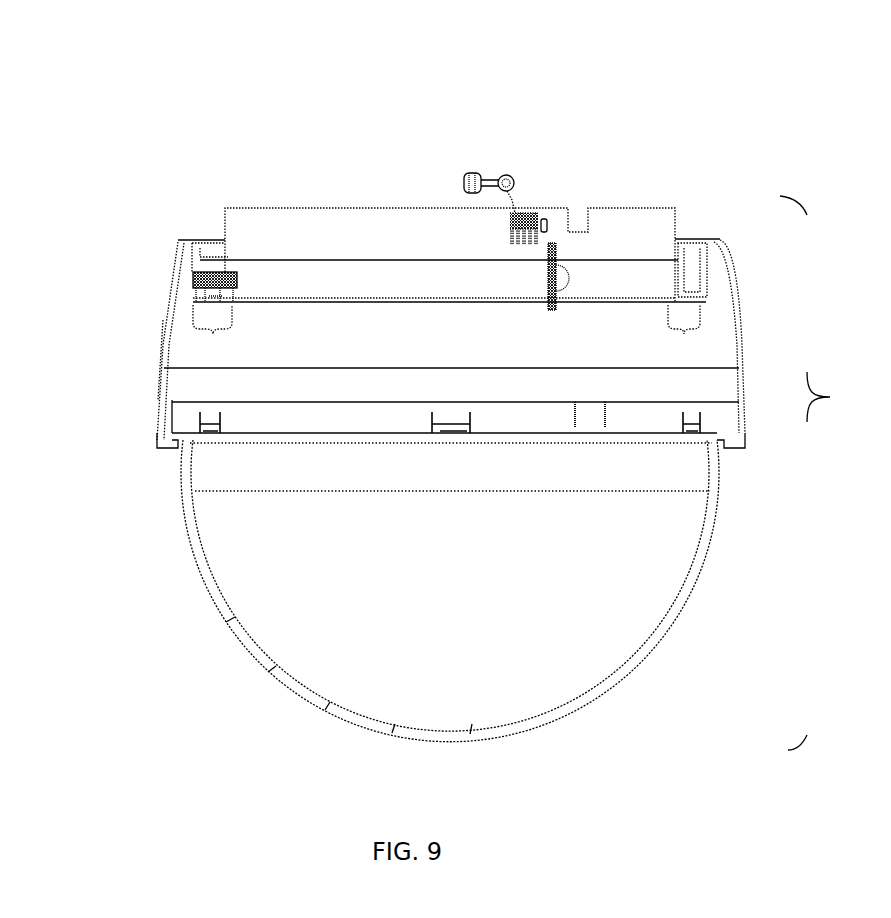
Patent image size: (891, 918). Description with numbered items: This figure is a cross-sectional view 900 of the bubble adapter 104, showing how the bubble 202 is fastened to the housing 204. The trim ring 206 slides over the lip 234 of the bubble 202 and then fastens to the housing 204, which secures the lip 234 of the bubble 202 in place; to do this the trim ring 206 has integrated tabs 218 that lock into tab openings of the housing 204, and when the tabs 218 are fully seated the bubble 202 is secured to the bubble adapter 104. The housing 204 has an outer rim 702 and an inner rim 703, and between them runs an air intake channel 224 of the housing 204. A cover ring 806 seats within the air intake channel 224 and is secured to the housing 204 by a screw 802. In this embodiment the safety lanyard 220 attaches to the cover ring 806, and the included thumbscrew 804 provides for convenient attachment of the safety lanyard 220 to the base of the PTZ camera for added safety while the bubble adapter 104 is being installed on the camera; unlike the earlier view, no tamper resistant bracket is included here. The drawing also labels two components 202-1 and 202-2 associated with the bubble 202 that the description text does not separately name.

The cross-sectional view 900 is at (274, 80).
The bubble adapter 104 is at (833, 473).
The cover ring 806 is at (632, 226).
The safety lanyard 220 is at (525, 217).
The thumbscrew 804 is at (465, 182).
The screw 802 is at (548, 270).
The outer rim 702 is at (181, 240).
The housing 204 is at (163, 305).
The second gasket 202-2 is at (237, 290).
The inner rim 703 is at (676, 290).
The air intake channel 224 is at (449, 333).
The first gasket 202-1 is at (560, 308).
The trim ring 206 is at (183, 412).
The lip 234 is at (179, 446).
The tabs 218 is at (692, 428).
The bubble 202 is at (245, 640).